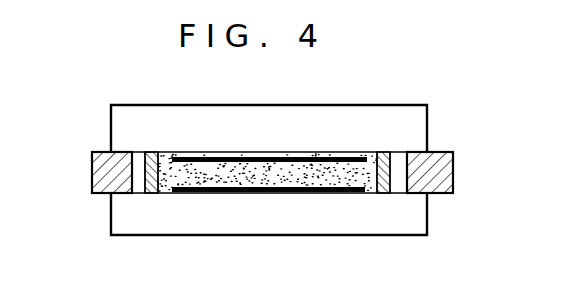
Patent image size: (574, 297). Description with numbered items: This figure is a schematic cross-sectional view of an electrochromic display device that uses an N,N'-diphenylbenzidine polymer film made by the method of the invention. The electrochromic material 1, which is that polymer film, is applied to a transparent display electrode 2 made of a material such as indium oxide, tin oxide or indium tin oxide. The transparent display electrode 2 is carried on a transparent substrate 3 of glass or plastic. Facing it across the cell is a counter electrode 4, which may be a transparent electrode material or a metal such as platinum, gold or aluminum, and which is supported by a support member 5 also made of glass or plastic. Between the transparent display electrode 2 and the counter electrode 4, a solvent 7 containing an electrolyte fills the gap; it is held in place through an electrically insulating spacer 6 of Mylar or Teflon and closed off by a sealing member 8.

The electrochromic material 1 is at (350, 158).
The transparent display electrode 2 is at (330, 155).
The transparent substrate 3 is at (195, 125).
The counter electrode 4 is at (351, 192).
The support member 5 is at (293, 208).
The electrically insulating spacer 6 is at (388, 152).
The solvent containing an electrolyte 7 is at (236, 172).
The sealing member 8 is at (443, 166).